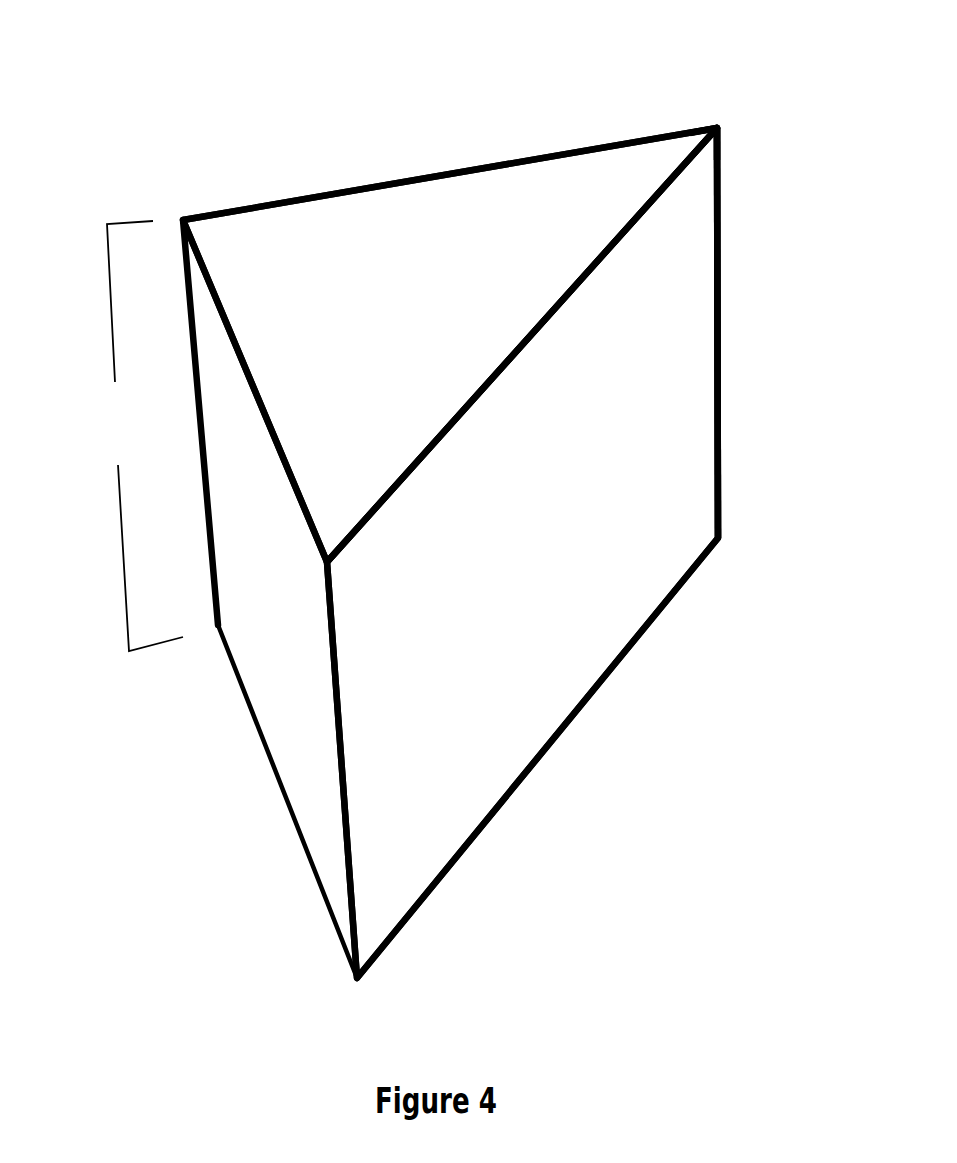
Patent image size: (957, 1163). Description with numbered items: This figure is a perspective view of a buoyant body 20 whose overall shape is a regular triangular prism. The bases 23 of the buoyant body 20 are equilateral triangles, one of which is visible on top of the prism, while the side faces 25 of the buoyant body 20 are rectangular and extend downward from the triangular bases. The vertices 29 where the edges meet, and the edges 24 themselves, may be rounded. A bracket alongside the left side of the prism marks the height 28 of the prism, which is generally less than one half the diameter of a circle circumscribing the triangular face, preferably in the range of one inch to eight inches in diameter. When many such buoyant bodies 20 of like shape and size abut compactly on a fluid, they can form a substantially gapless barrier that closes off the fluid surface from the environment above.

The buoyant body 20 is at (290, 125).
The bases 23 is at (489, 222).
The edges 24 is at (747, 363).
The side faces 25 is at (526, 679).
The height 28 is at (135, 436).
The vertices 29 is at (735, 110).